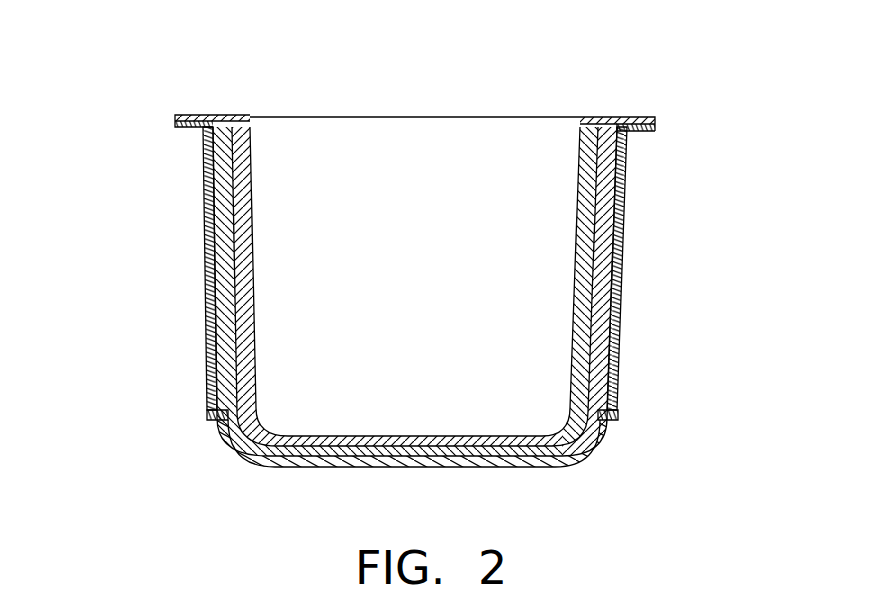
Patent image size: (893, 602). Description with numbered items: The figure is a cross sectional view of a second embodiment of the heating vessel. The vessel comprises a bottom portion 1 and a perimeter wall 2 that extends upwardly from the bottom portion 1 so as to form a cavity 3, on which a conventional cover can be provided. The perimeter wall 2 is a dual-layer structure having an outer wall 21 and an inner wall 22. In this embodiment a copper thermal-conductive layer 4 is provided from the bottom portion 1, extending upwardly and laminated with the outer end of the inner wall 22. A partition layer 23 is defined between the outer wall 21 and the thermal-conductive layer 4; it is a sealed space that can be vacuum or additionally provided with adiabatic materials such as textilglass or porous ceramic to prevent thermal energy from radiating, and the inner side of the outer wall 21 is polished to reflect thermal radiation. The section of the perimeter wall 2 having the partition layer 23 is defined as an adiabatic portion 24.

The bottom portion 1 is at (413, 493).
The perimeter wall 2 is at (178, 258).
The cavity 3 is at (368, 173).
The thermal-conductive layer 4 is at (590, 360).
The outer wall 21 is at (622, 187).
The inner wall 22 is at (250, 172).
The partition layer 23 is at (612, 265).
The adiabatic portion 24 is at (561, 130).